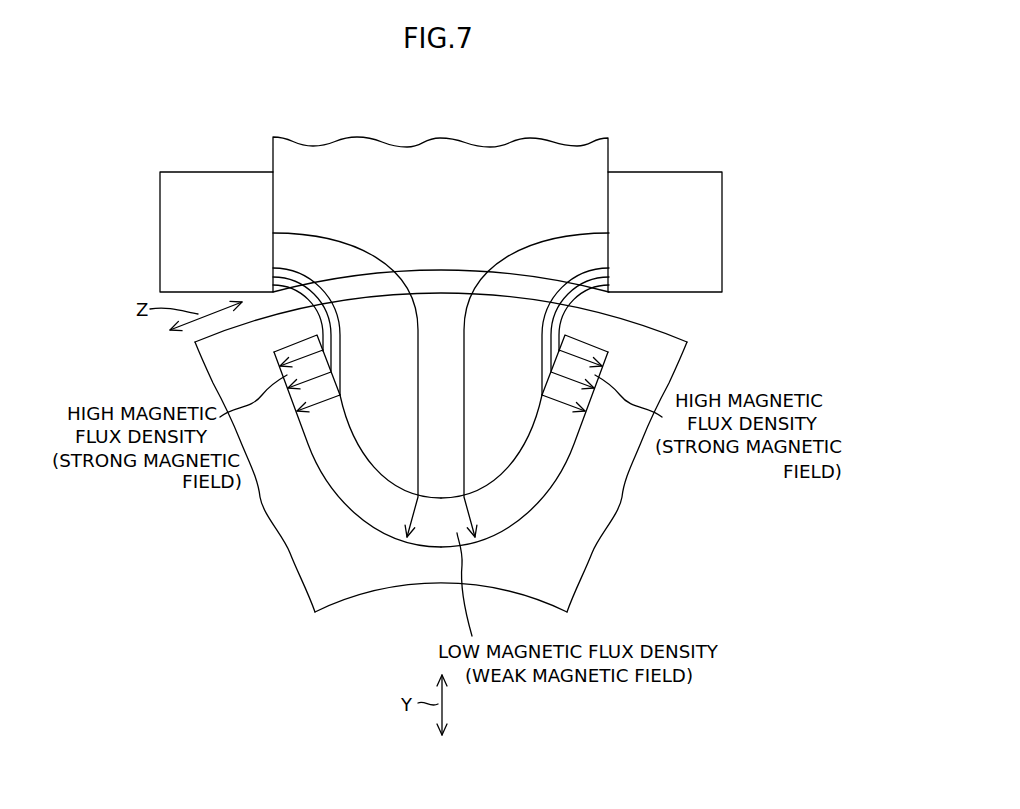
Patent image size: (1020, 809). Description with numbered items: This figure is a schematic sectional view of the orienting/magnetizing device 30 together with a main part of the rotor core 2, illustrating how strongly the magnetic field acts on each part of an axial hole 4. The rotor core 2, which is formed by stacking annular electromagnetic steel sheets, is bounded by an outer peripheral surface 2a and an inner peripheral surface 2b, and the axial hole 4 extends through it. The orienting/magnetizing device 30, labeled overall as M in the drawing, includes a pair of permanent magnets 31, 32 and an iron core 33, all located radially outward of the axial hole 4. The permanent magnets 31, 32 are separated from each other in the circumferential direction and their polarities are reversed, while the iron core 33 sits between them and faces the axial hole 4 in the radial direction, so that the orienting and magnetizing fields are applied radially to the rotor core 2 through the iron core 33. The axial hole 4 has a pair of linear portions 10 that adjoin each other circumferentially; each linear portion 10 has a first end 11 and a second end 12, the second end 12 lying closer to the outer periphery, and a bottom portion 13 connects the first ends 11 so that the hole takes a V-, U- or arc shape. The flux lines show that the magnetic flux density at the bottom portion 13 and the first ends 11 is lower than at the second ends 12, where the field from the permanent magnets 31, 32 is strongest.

The magnetizer M is at (627, 112).
The orienting/magnetizing device 30 is at (700, 152).
The permanent magnet 31 is at (220, 185).
The permanent magnet 32 is at (663, 185).
The iron core 33 is at (442, 162).
The rotor core 2 is at (636, 460).
The outer peripheral surface 2a is at (652, 326).
The inner peripheral surface 2b is at (343, 602).
The axial hole 4 is at (556, 489).
The linear portion 10 is at (325, 442).
The first end 11 is at (373, 515).
The second end 12 is at (296, 352).
The bottom portion 13 is at (422, 535).